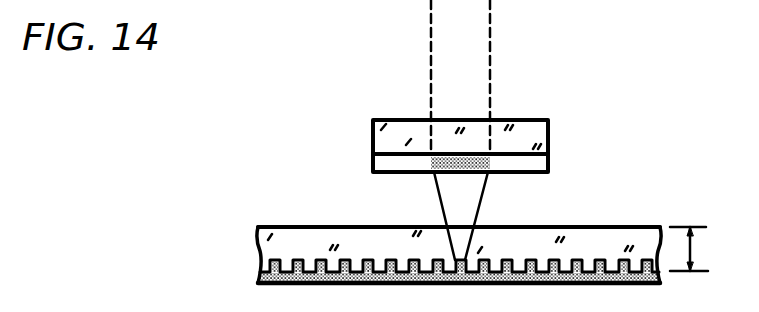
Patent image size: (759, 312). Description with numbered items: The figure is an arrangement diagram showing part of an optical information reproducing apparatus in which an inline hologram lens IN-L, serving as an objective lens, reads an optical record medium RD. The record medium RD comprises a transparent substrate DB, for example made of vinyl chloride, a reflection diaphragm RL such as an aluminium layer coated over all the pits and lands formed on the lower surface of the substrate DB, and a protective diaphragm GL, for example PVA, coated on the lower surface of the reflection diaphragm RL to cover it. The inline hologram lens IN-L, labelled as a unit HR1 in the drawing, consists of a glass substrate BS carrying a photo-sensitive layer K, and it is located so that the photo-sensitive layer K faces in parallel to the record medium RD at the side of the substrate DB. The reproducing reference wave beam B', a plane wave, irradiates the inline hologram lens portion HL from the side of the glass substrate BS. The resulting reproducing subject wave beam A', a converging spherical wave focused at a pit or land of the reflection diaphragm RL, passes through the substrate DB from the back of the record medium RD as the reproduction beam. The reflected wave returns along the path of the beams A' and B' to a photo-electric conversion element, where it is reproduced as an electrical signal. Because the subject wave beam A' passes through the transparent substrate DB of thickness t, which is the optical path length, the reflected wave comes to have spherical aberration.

The reproducing reference wave beam B' is at (432, 77).
The hologram recording element HR1 is at (479, 142).
The glass substrate BS is at (548, 138).
The photo-sensitive layer K is at (548, 165).
The inline hologram lens IN-L is at (373, 133).
The reproducing subject wave beam A' is at (434, 216).
The inline hologram lens portion HL is at (463, 172).
The optical record medium RD is at (388, 231).
The transparent substrate DB is at (261, 230).
The reflection diaphragm RL is at (258, 252).
The protective diaphragm GL is at (418, 269).
The thickness t is at (691, 243).